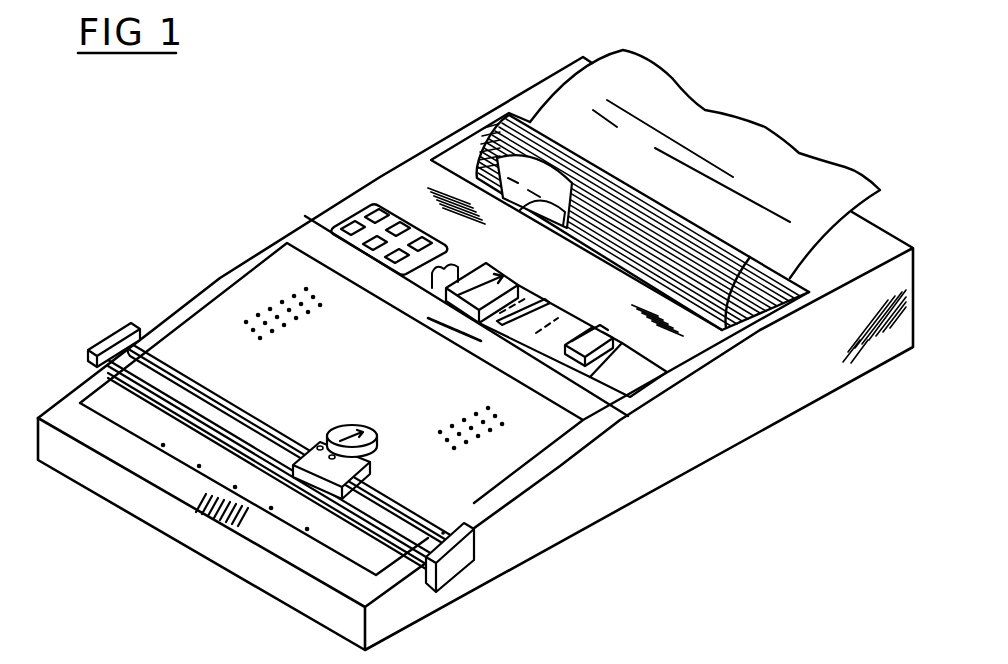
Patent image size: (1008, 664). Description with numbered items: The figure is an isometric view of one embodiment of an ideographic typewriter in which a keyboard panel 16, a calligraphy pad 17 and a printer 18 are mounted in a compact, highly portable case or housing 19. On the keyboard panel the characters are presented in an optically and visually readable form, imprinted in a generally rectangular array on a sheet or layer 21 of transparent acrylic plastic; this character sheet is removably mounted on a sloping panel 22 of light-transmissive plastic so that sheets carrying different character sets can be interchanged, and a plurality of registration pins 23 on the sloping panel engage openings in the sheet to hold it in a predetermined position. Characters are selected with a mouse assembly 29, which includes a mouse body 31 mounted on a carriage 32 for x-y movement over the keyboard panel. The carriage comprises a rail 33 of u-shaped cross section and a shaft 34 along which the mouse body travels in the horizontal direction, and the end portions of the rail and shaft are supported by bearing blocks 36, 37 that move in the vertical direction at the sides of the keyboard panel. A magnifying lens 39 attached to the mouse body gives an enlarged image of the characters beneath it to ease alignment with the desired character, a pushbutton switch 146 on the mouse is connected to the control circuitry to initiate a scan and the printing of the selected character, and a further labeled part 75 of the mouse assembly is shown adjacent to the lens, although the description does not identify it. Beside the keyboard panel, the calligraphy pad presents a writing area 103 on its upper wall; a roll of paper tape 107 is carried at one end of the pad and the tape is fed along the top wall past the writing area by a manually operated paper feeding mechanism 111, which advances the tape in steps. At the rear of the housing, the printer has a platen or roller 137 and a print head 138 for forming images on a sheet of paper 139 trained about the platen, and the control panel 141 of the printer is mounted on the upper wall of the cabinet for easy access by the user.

The keyboard panel 16 is at (227, 292).
The calligraphy pad 17 is at (530, 272).
The printer 18 is at (474, 116).
The case or housing 19 is at (597, 500).
The sheet or layer 21 is at (374, 384).
The sloping panel 22 is at (308, 214).
The registration pins 23 is at (197, 467).
The mouse assembly 29 is at (350, 416).
The mouse body 31 is at (291, 465).
The carriage 32 is at (183, 390).
The rail 33 is at (375, 515).
The shaft 34 is at (166, 346).
The bearing block 36 is at (108, 343).
The bearing block 37 is at (454, 567).
The magnifying lens 39 is at (362, 430).
The carriage mount 75 is at (377, 457).
The writing area 103 is at (553, 298).
The roll of paper tape 107 is at (631, 378).
The paper feeding mechanism 111 is at (630, 342).
The platen or roller 137 is at (668, 222).
The print head 138 is at (537, 200).
The sheet of paper 139 is at (705, 110).
The control panel 141 is at (360, 205).
The pushbutton switch 146 is at (320, 441).